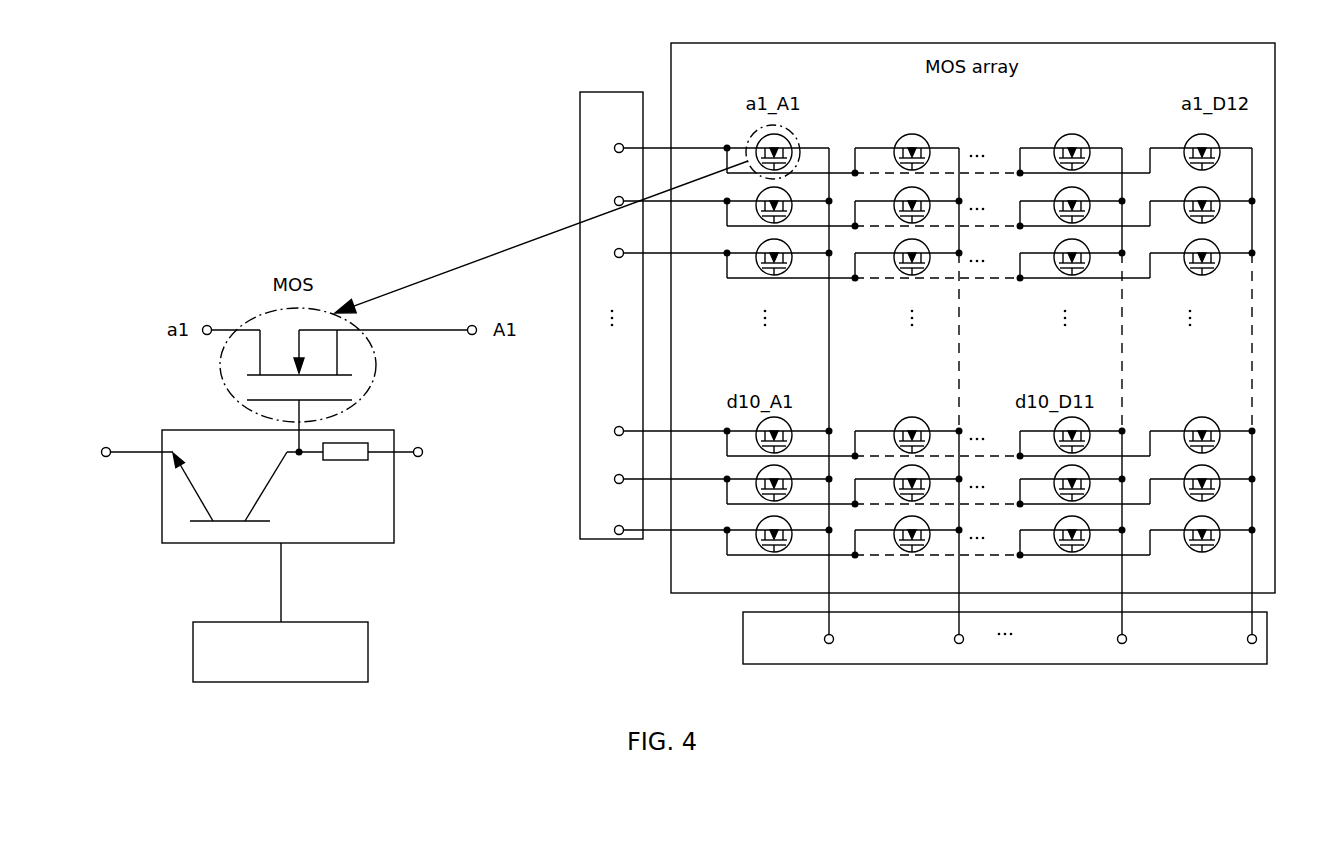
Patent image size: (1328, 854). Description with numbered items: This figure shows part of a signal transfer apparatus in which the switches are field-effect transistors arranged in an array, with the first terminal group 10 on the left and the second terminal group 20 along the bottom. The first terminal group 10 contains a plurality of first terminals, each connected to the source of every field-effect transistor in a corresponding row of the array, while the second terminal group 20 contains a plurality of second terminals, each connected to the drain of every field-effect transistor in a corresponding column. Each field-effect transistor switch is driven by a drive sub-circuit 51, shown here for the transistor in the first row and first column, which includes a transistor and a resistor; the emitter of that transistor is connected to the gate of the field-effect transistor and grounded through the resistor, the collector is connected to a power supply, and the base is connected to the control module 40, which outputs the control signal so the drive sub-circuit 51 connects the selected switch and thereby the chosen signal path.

The first terminal group 10 is at (612, 92).
The second terminal group 20 is at (1268, 640).
The control module 40 is at (194, 633).
The drive sub-circuit 51 is at (394, 522).